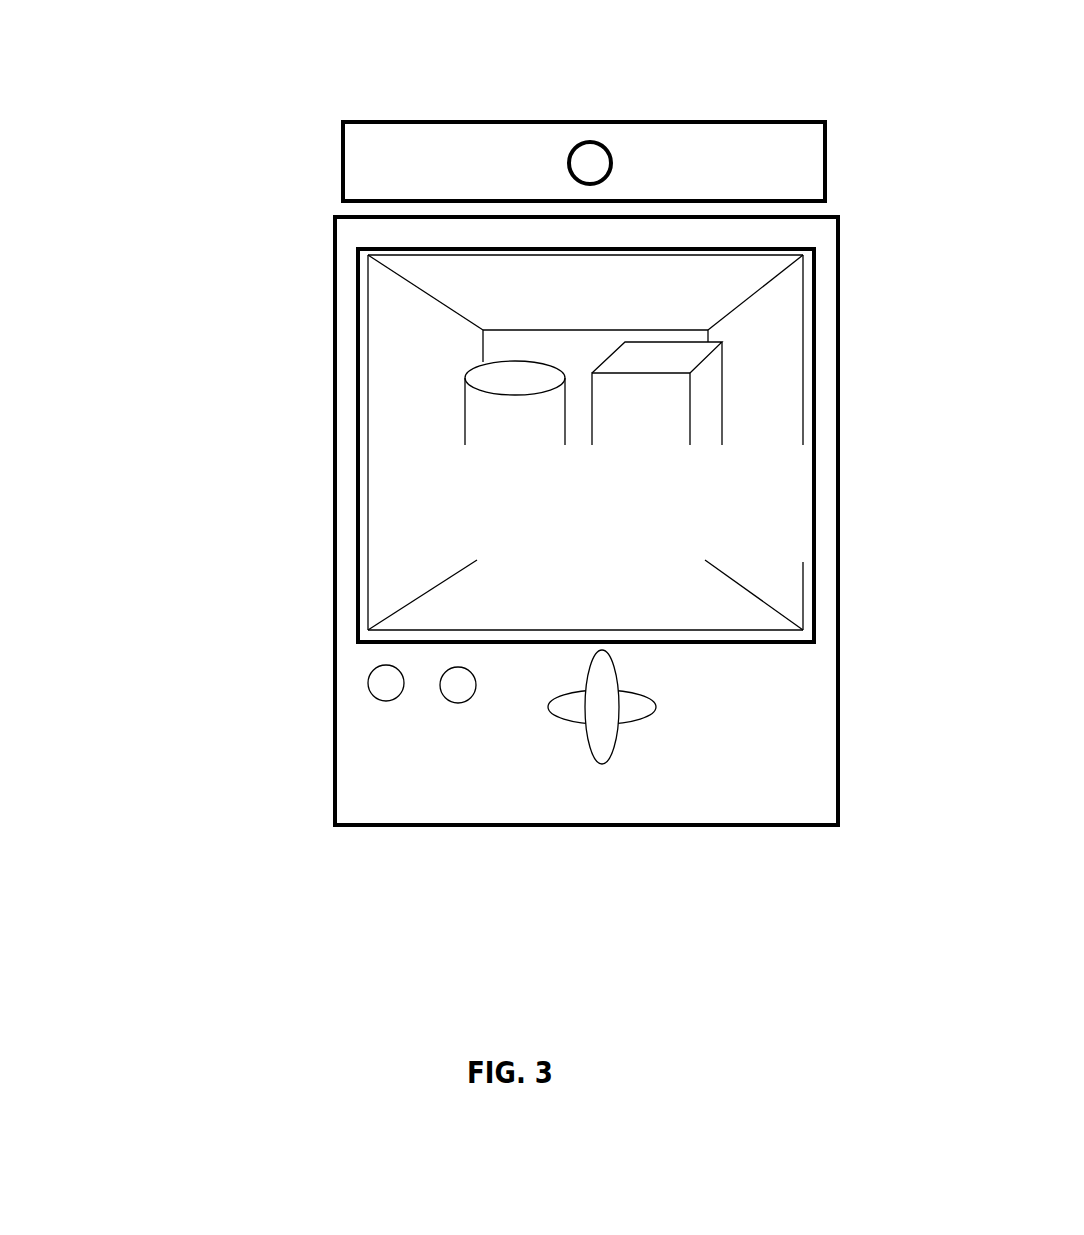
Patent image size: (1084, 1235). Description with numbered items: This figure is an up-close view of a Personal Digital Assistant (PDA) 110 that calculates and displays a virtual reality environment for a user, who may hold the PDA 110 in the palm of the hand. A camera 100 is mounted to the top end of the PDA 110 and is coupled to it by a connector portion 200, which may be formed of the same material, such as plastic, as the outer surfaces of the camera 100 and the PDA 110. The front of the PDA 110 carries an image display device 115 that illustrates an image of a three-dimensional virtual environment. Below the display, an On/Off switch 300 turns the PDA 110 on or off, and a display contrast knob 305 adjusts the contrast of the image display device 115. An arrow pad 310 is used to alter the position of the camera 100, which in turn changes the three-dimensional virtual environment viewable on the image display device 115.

The camera 100 is at (592, 152).
The connector portion 200 is at (822, 208).
The Personal Digital Assistant (PDA) 110 is at (310, 860).
The image display device 115 is at (690, 603).
The On/Off switch 300 is at (375, 688).
The display contrast knob 305 is at (462, 688).
The arrow pad 310 is at (603, 732).